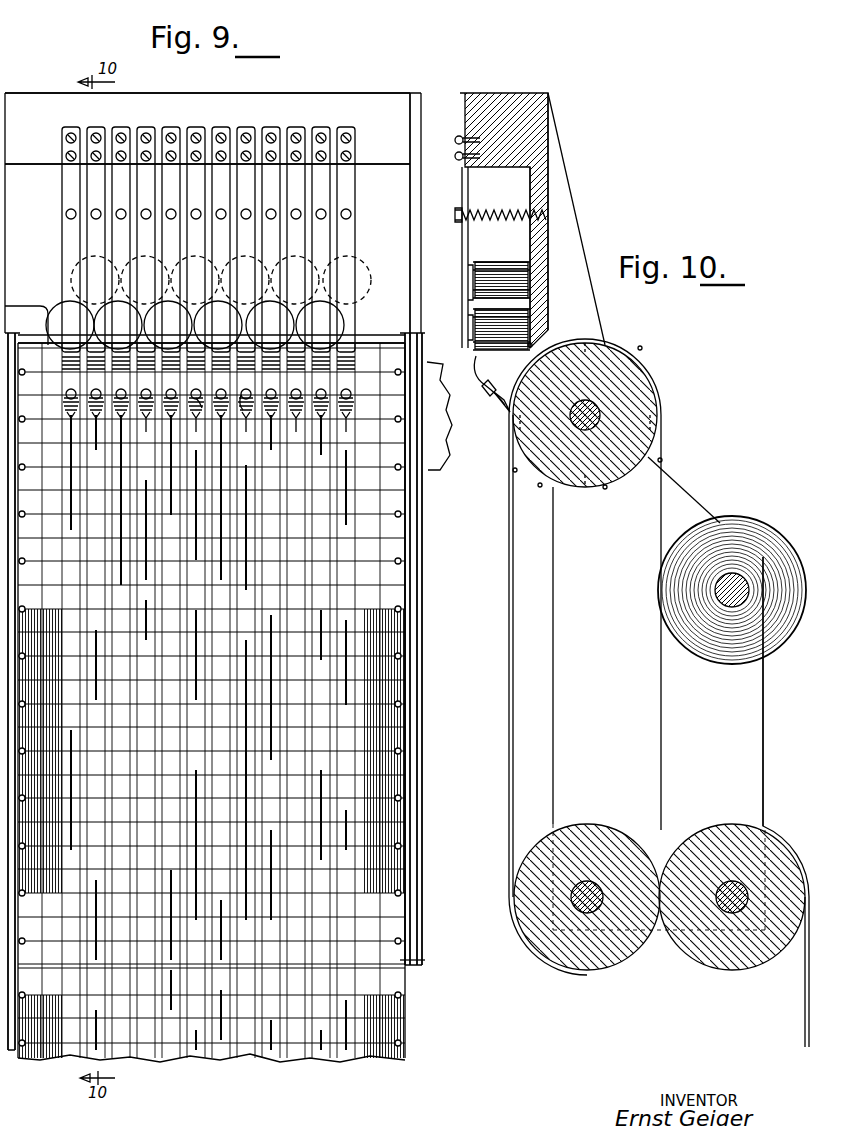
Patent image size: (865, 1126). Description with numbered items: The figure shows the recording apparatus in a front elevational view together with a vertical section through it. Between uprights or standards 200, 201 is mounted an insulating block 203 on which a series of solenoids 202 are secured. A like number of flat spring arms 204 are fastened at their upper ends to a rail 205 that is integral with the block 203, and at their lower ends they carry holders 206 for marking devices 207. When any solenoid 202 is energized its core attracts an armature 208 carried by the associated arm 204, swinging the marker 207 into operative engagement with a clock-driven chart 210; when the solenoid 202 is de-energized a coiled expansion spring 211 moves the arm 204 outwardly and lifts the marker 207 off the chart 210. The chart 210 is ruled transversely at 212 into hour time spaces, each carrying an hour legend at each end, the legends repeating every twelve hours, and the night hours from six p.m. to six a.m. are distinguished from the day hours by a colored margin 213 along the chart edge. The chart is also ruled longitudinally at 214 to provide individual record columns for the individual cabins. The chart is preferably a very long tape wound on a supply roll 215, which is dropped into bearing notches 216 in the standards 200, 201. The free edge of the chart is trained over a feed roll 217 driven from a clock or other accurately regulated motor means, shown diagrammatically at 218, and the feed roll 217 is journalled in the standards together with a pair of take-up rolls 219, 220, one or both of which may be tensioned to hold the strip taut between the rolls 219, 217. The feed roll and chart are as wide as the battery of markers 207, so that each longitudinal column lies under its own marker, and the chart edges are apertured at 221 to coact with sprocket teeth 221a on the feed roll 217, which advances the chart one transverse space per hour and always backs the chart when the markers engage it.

In FIG. 9, the upright 200 is at (2, 97).
In FIG. 10, the upright 200 is at (560, 210).
In FIG. 9, the upright 201 is at (418, 93).
In FIG. 9, the solenoid 202 is at (347, 330).
In FIG. 10, the solenoid 202 is at (490, 358).
In FIG. 9, the insulating block 203 is at (398, 200).
In FIG. 10, the insulating block 203 is at (545, 180).
In FIG. 9, the flat spring arm 204 is at (297, 240).
In FIG. 10, the flat spring arm 204 is at (462, 250).
In FIG. 9, the rail 205 is at (375, 100).
In FIG. 10, the rail 205 is at (508, 95).
In FIG. 9, the holder 206 is at (243, 410).
In FIG. 10, the holder 206 is at (480, 396).
In FIG. 9, the marking device 207 is at (202, 408).
In FIG. 10, the marking device 207 is at (505, 412).
In FIG. 10, the armature 208 is at (468, 278).
In FIG. 9, the chart 210 is at (510, 542).
In FIG. 10, the chart 210 is at (659, 693).
In FIG. 10, the coiled expansion spring 211 is at (515, 210).
In FIG. 9, the transverse ruling 212 is at (222, 592).
In FIG. 9, the colored margin 213 is at (400, 735).
In FIG. 9, the longitudinal ruling 214 is at (160, 690).
In FIG. 10, the supply roll 215 is at (700, 660).
In FIG. 10, the bearing notch 216 is at (745, 575).
In FIG. 9, the feed roll 217 is at (412, 492).
In FIG. 10, the feed roll 217 is at (645, 408).
In FIG. 10, the motor means 218 is at (438, 362).
In FIG. 9, the take-up roll 219 is at (415, 945).
In FIG. 10, the take-up roll 219 is at (595, 835).
In FIG. 10, the take-up roll 220 is at (730, 835).
In FIG. 9, the aperture 221 is at (440, 585).
In FIG. 9, the sprocket tooth 221a is at (430, 490).
In FIG. 10, the sprocket tooth 221a is at (562, 487).